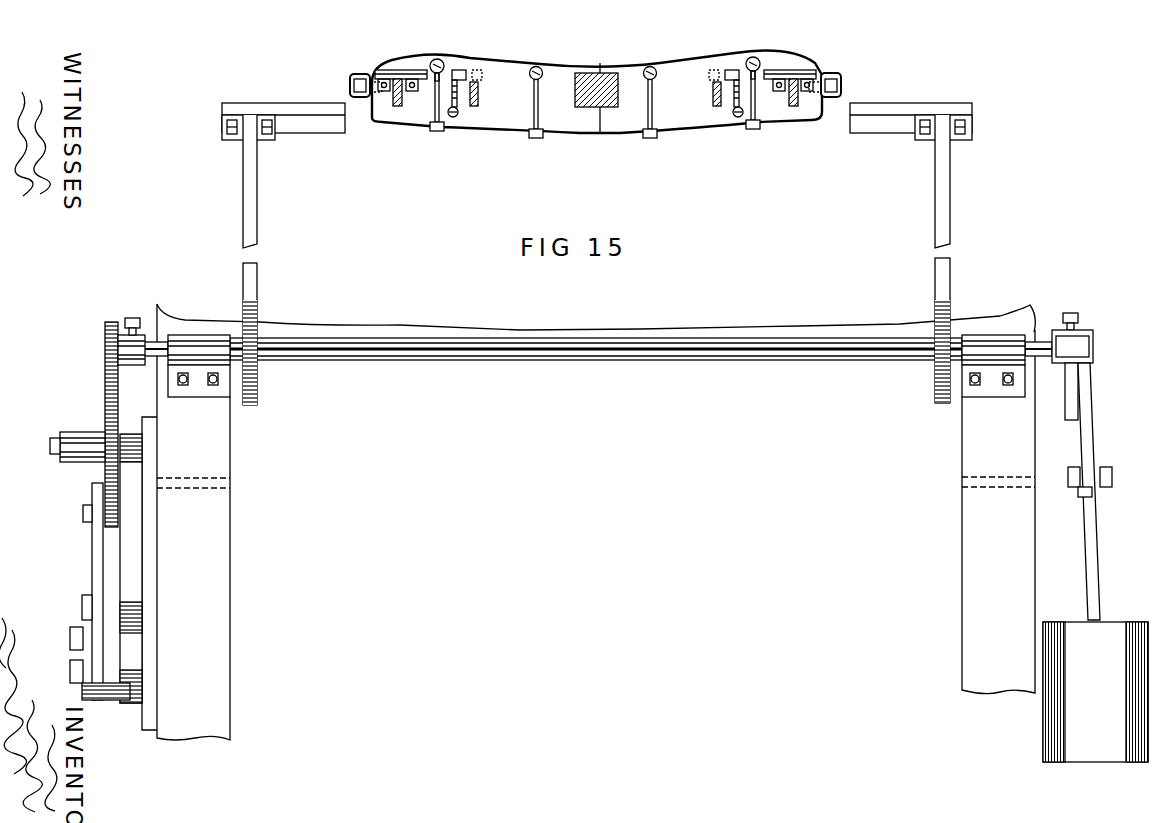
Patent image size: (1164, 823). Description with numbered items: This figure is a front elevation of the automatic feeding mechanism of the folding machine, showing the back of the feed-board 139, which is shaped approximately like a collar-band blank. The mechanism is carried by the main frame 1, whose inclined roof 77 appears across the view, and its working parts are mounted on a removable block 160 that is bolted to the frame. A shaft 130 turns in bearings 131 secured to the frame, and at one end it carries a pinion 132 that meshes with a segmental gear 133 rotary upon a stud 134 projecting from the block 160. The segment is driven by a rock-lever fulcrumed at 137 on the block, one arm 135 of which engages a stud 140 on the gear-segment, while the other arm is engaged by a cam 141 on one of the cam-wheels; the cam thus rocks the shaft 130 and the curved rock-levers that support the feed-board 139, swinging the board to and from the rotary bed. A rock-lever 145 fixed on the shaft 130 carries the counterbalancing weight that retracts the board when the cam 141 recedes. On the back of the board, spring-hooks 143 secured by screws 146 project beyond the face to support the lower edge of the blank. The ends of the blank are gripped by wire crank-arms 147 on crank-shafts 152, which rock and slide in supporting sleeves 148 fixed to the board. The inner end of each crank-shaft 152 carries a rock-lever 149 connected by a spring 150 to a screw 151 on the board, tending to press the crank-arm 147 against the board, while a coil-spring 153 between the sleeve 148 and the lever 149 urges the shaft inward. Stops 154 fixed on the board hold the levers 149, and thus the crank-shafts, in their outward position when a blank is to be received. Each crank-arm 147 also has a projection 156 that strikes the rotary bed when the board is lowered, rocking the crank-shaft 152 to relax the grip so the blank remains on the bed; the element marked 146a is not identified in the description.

The main frame 1 is at (225, 606).
The inclined roof 77 is at (414, 326).
The shaft 130 is at (583, 360).
The bearings 131 is at (185, 340).
The pinion 132 is at (105, 335).
The segmental gear 133 is at (105, 403).
The stud 134 is at (58, 455).
The rock-lever arm 135 is at (96, 543).
The fulcrum 137 is at (76, 630).
The feed-board 139 is at (612, 127).
The stud 140 is at (80, 512).
The cam 141 is at (82, 688).
The spring-hooks 143 is at (435, 132).
The rock-lever 145 is at (1082, 442).
The screws 146 is at (442, 64).
The weight 146a is at (1095, 692).
The crank-arms 147 is at (358, 100).
The supporting sleeves 148 is at (400, 70).
The rock-lever 149 is at (449, 76).
The spring 150 is at (448, 100).
The screw 151 is at (462, 112).
The crank-shafts 152 is at (350, 78).
The coil-spring 153 is at (763, 98).
The stops 154 is at (470, 108).
The projection 156 is at (733, 104).
The block 160 is at (155, 555).